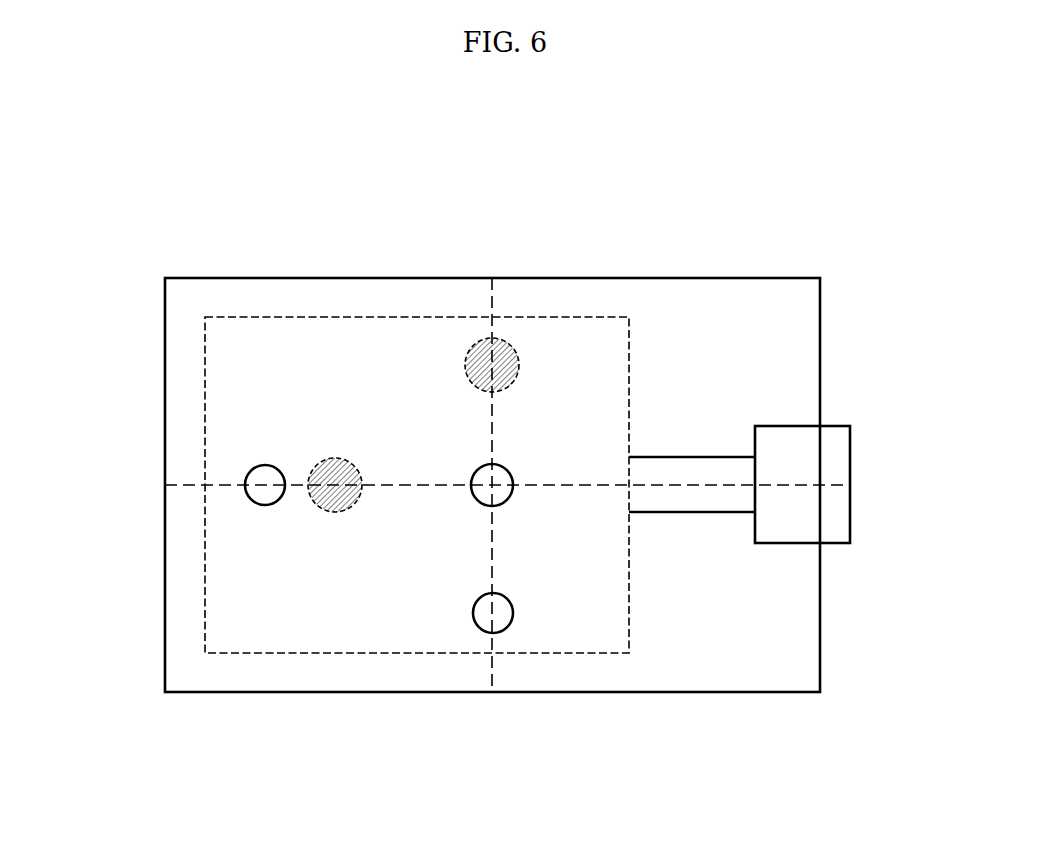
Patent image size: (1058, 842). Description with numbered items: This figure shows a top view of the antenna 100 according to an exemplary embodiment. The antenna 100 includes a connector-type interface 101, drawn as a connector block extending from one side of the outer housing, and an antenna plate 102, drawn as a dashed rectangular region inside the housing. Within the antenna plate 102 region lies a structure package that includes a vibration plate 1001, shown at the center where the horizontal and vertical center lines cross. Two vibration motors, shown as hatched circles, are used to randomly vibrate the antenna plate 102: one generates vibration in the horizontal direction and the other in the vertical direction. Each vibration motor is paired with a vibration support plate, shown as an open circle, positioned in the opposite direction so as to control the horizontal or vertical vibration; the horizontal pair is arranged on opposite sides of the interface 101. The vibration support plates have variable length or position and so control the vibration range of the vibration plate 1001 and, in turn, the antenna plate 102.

The antenna 100 is at (782, 207).
The interface 101 is at (851, 483).
The antenna plate 102 is at (587, 317).
The vibration plate 1001 is at (478, 500).